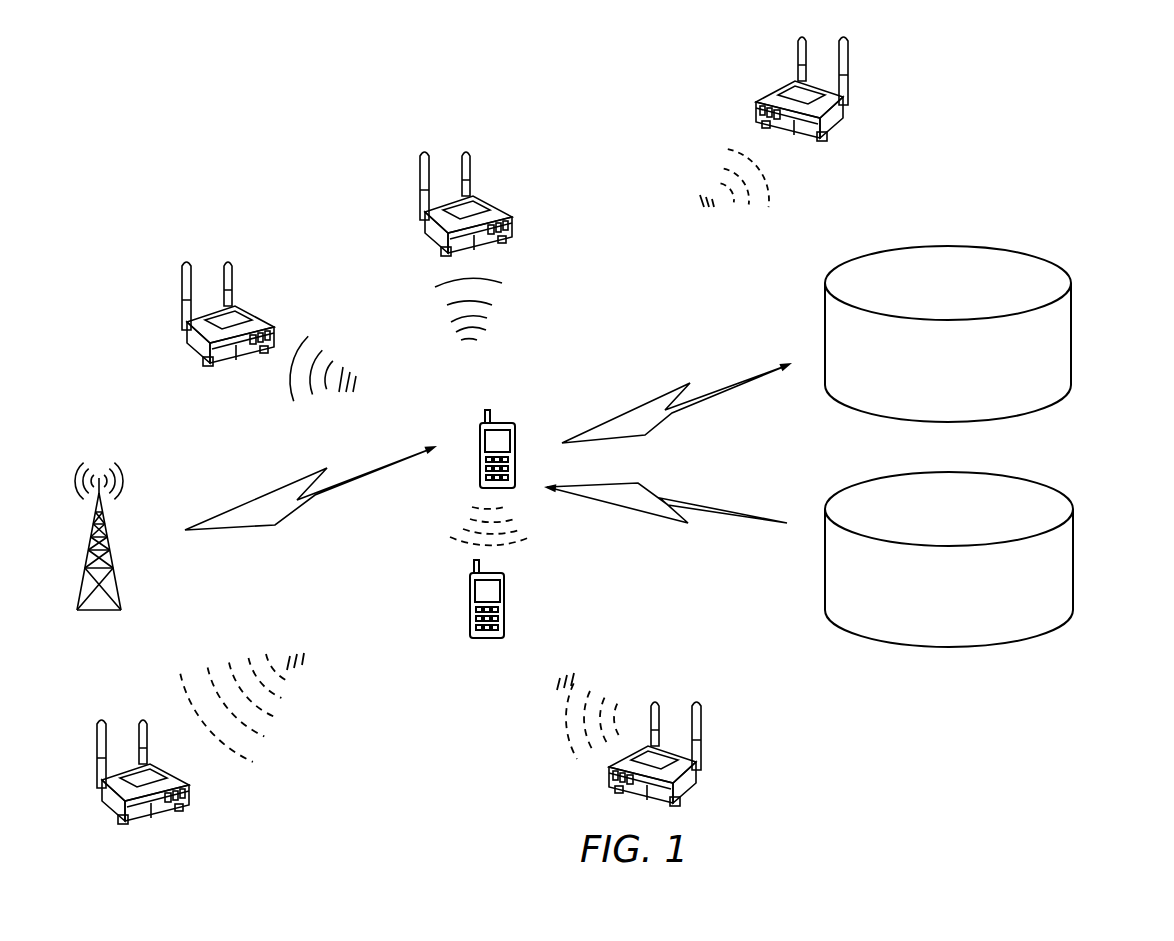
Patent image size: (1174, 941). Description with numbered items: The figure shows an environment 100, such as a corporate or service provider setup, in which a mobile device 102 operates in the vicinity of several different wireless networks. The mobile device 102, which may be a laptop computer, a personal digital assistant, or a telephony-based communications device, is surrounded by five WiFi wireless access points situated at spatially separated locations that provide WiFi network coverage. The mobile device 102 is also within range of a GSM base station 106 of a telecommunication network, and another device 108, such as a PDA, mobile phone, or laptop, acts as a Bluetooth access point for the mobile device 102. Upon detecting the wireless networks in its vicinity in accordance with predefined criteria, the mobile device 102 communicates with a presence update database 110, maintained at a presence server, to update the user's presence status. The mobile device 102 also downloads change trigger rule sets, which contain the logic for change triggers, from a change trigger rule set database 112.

The environment 100 is at (1102, 99).
The mobile device 102 is at (480, 480).
The GSM base station 106 is at (103, 453).
The another device 108 is at (470, 619).
The presence update database 110 is at (1030, 247).
The change trigger rule set database 112 is at (1032, 473).